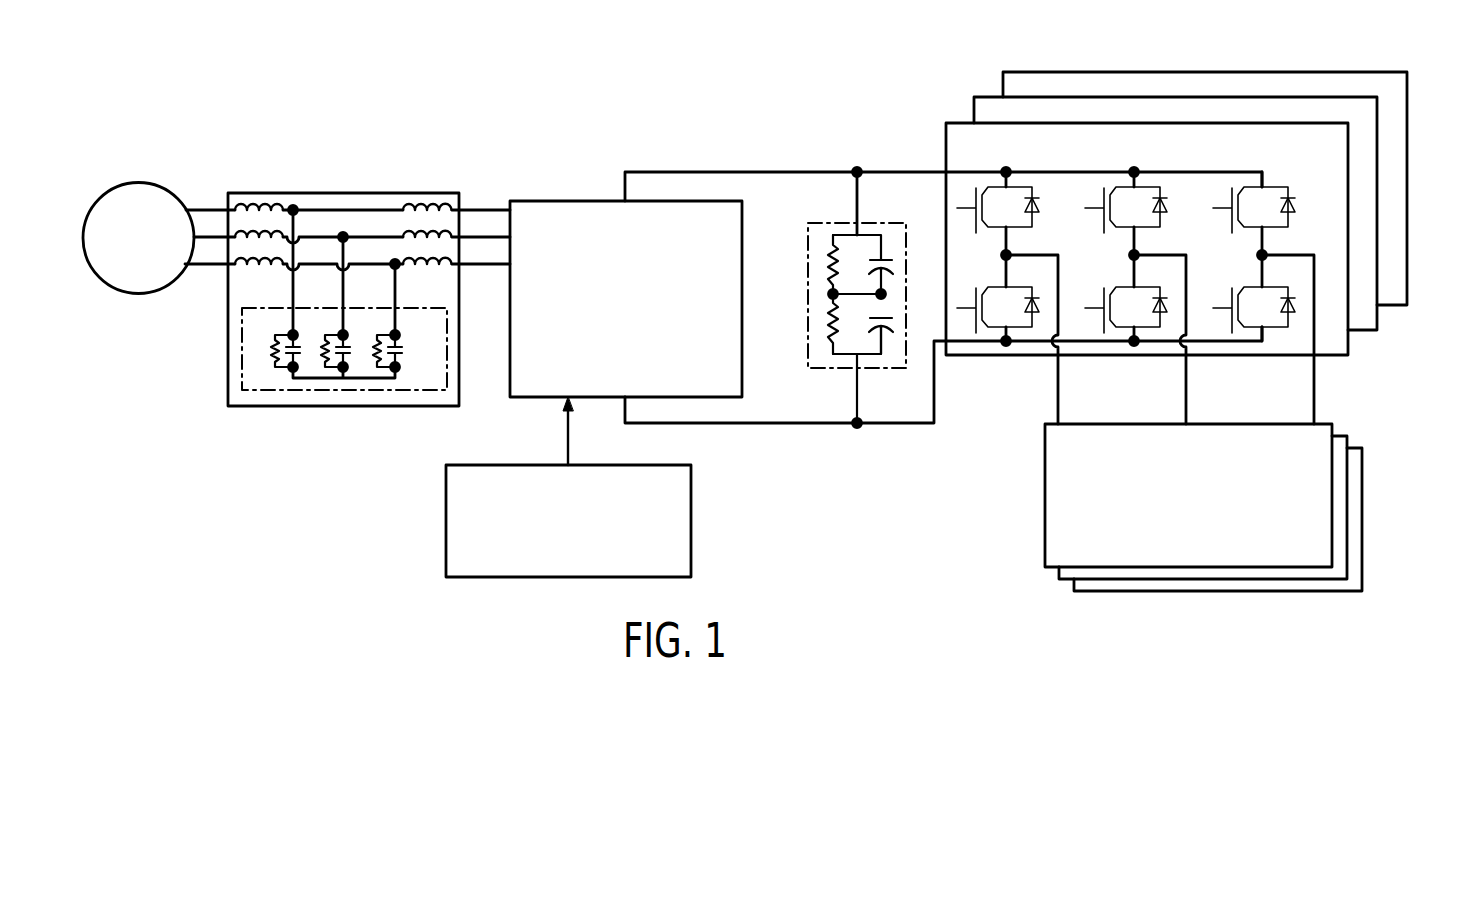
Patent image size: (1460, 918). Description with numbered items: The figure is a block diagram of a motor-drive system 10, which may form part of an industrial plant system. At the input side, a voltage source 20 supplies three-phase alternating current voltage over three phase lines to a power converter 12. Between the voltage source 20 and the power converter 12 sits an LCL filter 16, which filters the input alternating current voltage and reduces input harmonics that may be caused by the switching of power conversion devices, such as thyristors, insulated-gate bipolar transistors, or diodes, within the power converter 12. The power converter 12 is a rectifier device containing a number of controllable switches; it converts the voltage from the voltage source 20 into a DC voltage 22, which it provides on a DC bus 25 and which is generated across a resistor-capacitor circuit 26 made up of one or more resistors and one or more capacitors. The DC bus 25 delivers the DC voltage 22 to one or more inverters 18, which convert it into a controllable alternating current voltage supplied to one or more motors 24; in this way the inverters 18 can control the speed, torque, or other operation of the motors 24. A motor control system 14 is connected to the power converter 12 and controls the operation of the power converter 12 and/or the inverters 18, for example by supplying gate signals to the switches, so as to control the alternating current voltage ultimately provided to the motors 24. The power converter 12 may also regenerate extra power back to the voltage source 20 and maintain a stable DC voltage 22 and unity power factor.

The motor-drive system 10 is at (628, 52).
The power converter 12 is at (568, 201).
The motor control system 14 is at (692, 492).
The LCL filter 16 is at (344, 193).
The inverter 18 is at (1412, 157).
The voltage source 20 is at (119, 186).
The DC voltage 22 is at (775, 236).
The motor 24 is at (1339, 427).
The DC bus 25 is at (836, 154).
The resistor-capacitor (RC) circuit 26 is at (901, 226).